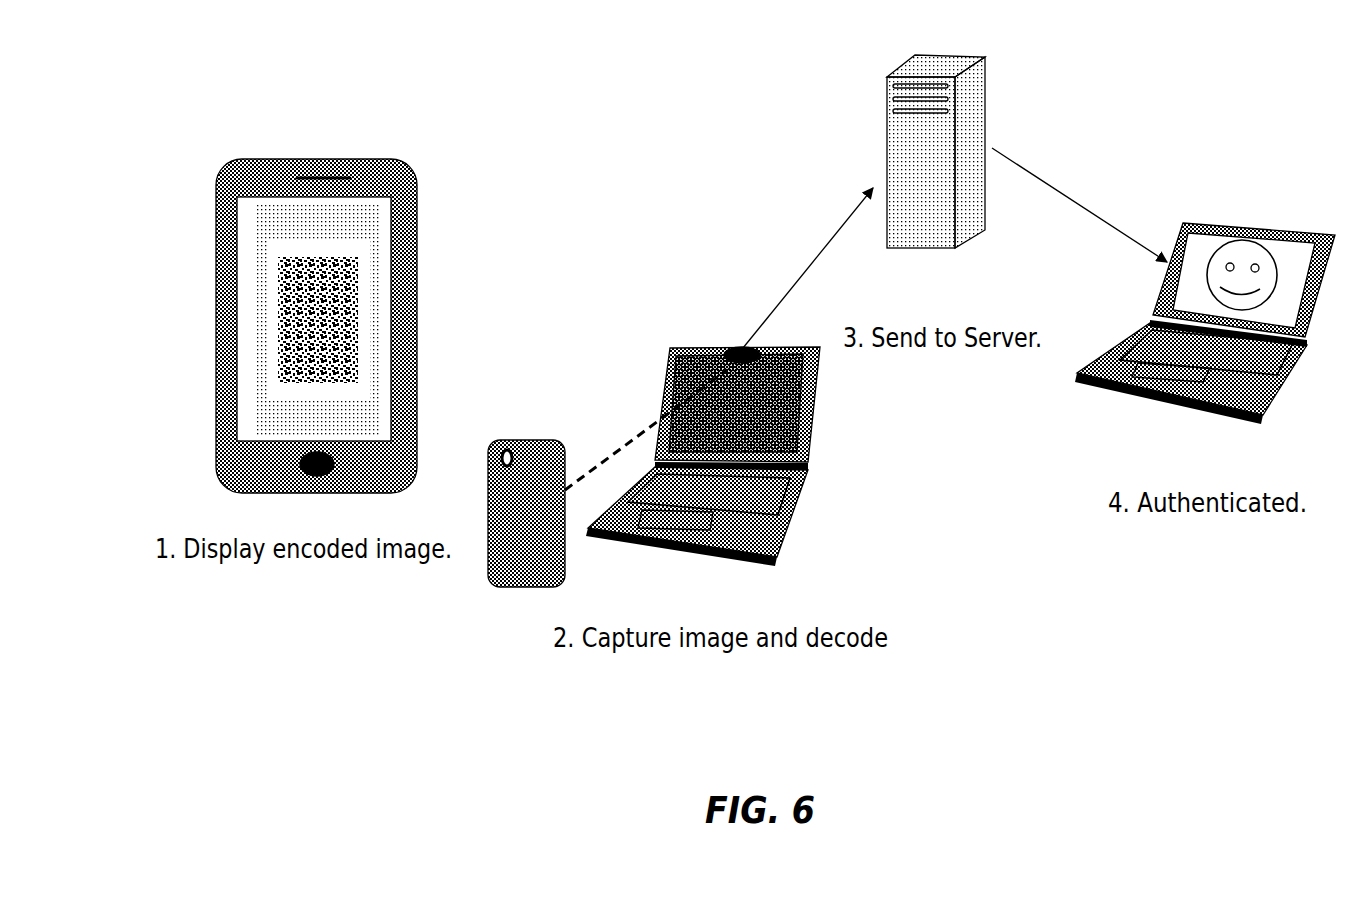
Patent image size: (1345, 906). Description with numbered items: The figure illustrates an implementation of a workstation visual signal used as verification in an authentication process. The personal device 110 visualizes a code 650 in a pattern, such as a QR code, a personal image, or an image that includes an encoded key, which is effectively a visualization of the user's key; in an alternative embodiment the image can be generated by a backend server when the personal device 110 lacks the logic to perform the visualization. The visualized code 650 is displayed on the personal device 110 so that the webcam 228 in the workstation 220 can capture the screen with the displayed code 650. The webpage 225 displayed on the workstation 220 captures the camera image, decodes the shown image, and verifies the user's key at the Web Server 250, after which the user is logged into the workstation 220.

The personal device 110 is at (217, 168).
The code 650 is at (357, 283).
The workstation 220 is at (703, 406).
The webpage 225 is at (736, 403).
The webcam 228 is at (731, 348).
The Web Server 250 is at (977, 98).